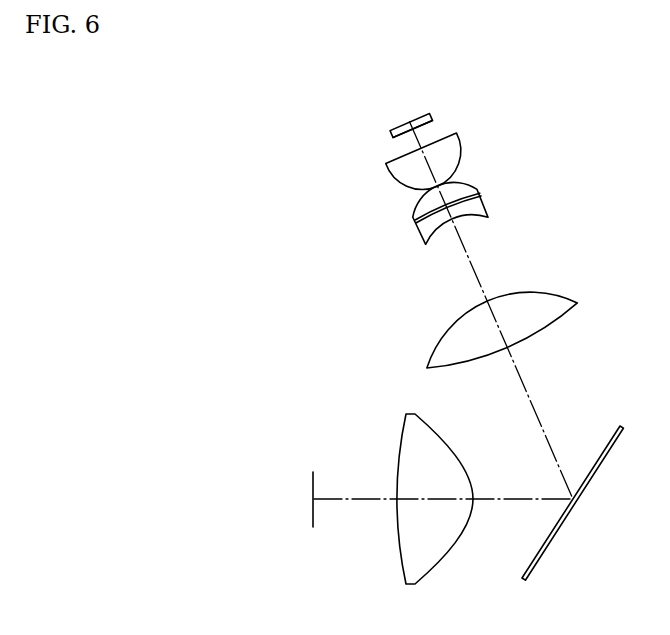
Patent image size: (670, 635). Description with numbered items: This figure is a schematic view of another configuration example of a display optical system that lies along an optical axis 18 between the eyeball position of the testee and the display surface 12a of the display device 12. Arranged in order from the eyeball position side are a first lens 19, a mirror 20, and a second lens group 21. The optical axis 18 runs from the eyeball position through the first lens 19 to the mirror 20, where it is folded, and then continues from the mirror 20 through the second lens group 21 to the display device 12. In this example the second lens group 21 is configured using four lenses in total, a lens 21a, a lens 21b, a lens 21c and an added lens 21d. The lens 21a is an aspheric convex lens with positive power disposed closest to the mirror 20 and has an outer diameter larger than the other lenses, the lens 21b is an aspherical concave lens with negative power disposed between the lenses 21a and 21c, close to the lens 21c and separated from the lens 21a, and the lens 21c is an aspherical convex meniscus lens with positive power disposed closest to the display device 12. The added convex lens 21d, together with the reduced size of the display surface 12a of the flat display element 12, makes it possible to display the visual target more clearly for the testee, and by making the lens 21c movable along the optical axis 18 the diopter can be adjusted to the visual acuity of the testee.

The display device 12 is at (399, 124).
The display surface 12a is at (403, 140).
The optical axis 18 is at (540, 423).
The first lens 19 is at (438, 432).
The mirror 20 is at (539, 552).
The second lens group 21 is at (633, 305).
The lens 21a is at (547, 328).
The lens 21b is at (486, 216).
The lens 21c is at (459, 151).
The lens 21d is at (467, 188).